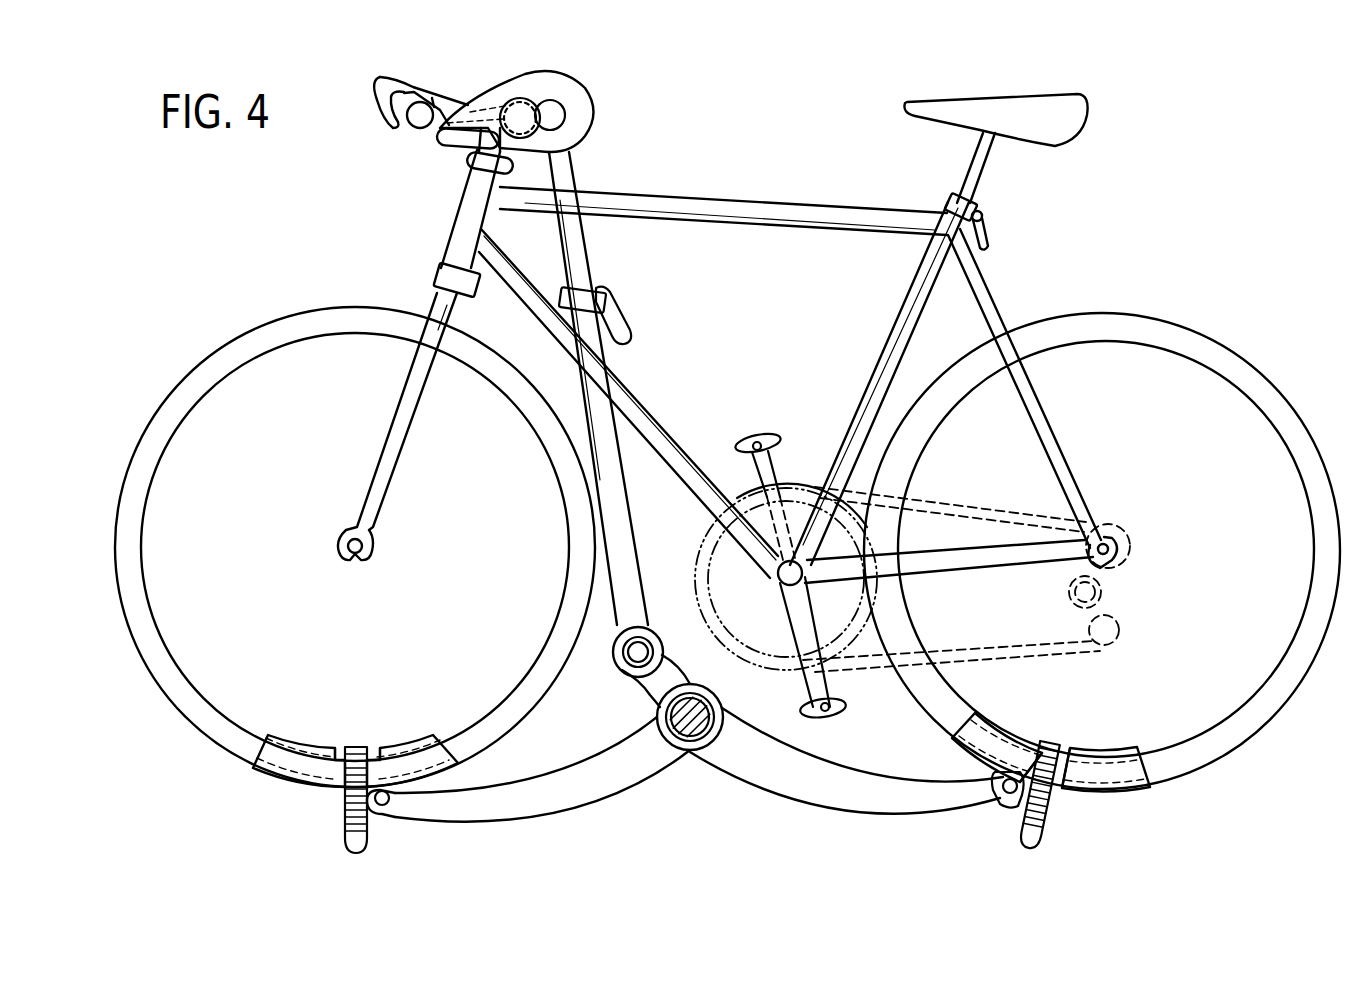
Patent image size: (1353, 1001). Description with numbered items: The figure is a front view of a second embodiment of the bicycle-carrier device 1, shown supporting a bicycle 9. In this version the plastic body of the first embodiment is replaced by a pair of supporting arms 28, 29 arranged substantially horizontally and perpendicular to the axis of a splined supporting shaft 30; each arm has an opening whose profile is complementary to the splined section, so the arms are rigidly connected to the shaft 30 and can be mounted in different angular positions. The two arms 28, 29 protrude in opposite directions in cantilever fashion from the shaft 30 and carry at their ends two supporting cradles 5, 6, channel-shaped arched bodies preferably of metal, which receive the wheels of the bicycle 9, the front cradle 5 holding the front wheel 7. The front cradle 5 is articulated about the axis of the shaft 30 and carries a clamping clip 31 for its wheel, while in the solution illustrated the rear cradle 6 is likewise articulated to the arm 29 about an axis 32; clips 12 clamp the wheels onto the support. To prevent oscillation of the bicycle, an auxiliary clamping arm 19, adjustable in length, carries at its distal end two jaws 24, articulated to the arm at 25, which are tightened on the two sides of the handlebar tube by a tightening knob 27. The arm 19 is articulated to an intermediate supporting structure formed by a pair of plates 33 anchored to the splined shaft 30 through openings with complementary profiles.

The bicycle-carrier device 1 is at (716, 753).
The front cradle 5 is at (288, 760).
The rear cradle 6 is at (1133, 777).
The front wheel 7 is at (249, 335).
The bicycle 9 is at (760, 193).
The clips 12 is at (343, 817).
The auxiliary clamping arm 19 is at (600, 418).
The jaws 24 is at (498, 96).
The articulation 25 is at (564, 114).
The tightening knob 27 is at (523, 118).
The supporting arm 28 is at (647, 767).
The supporting arm 29 is at (838, 768).
The splined supporting shaft 30 is at (705, 692).
The clamping clip 31 is at (355, 746).
The axis 32 is at (1003, 783).
The plates 33 is at (648, 678).